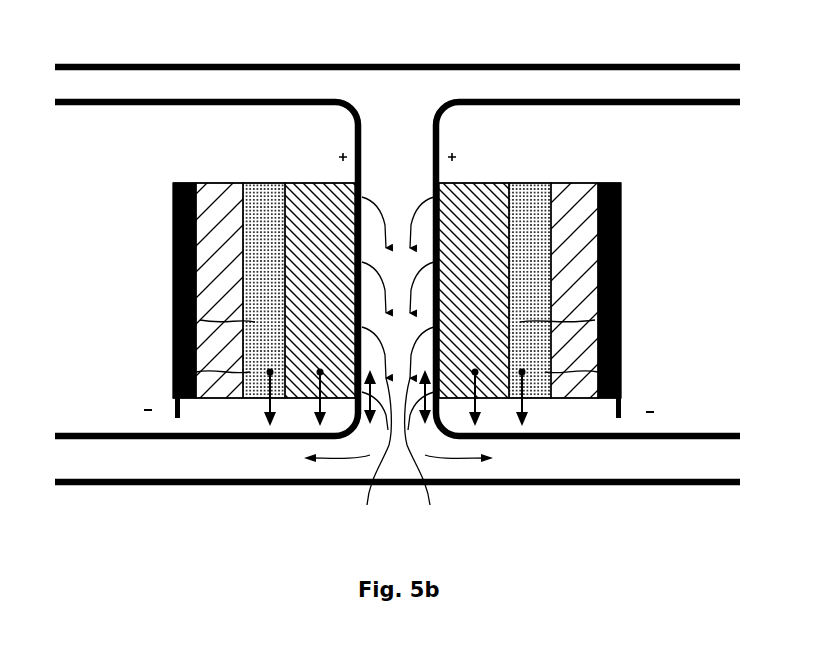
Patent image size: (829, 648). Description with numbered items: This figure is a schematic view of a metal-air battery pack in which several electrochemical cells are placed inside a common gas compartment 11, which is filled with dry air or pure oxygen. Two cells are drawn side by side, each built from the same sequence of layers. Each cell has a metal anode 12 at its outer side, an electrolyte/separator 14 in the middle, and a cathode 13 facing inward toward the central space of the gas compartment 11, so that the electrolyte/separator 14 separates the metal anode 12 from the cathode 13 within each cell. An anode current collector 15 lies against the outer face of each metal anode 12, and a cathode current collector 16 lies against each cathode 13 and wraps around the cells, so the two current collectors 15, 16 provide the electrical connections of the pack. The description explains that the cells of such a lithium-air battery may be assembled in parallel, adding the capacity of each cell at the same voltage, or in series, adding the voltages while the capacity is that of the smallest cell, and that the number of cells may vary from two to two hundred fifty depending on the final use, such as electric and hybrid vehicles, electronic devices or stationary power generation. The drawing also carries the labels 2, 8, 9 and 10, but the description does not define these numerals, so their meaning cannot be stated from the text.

The cover layer 2 is at (172, 52).
The first region 8 is at (200, 321).
The second region 9 is at (196, 371).
The flow path 10 is at (396, 366).
The gas compartment 11 is at (110, 460).
The metal anode 12 is at (216, 192).
The cathode 13 is at (316, 193).
The electrolyte/separator 14 is at (265, 193).
The anode current collector 15 is at (173, 185).
The cathode current collector 16 is at (444, 107).